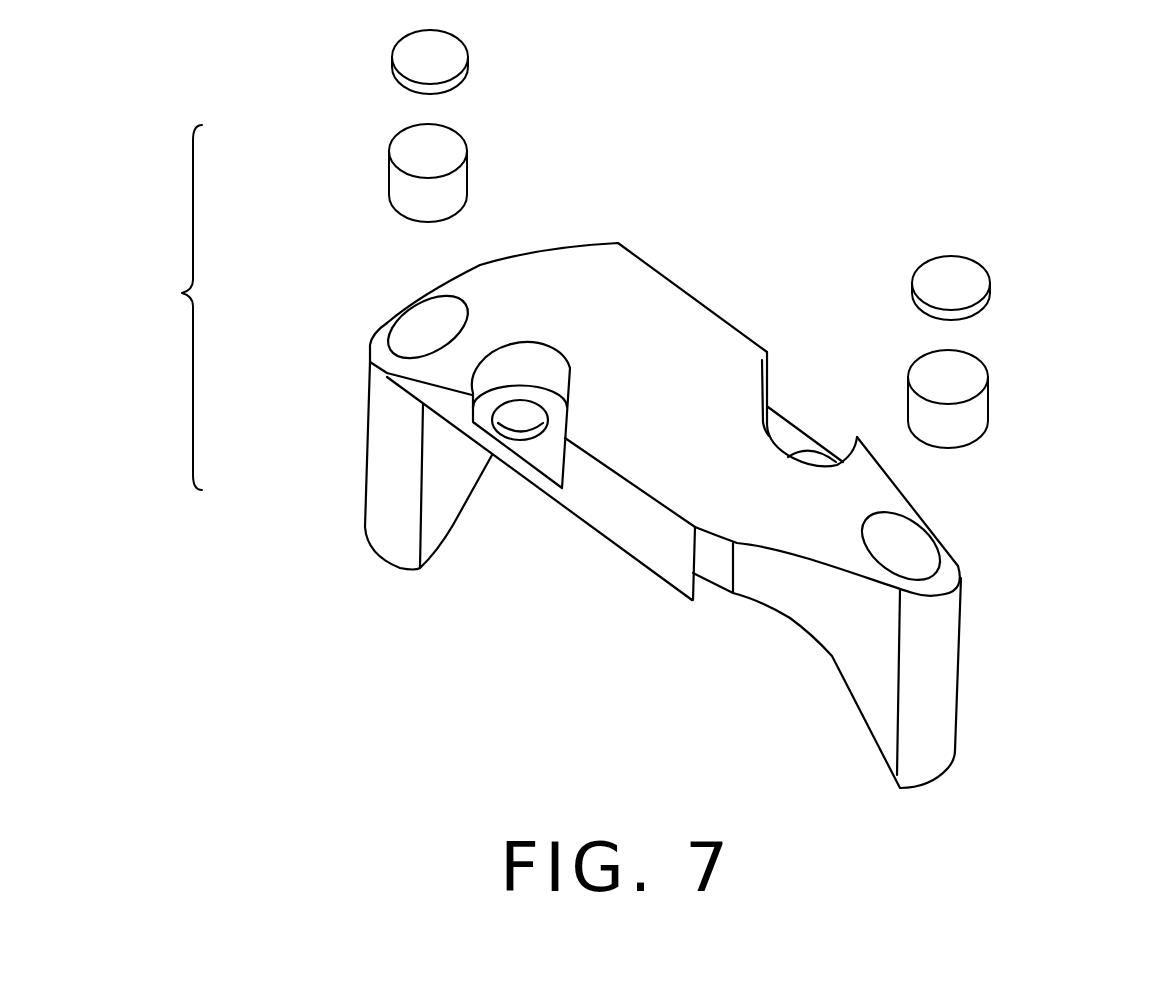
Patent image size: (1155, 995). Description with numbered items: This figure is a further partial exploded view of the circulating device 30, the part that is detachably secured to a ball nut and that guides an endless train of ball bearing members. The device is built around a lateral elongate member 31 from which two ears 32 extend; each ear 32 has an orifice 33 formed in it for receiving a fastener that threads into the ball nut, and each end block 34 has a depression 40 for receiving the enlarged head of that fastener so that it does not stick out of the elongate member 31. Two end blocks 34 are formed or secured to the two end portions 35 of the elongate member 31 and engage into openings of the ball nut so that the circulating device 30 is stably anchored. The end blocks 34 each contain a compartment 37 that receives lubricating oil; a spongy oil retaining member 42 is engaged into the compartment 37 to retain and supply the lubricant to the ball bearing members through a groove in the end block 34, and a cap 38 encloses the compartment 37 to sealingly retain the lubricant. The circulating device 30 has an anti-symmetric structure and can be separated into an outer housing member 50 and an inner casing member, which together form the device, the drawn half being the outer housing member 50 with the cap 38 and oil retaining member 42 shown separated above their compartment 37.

The circulating device 30 is at (692, 451).
The elongate member 31 is at (692, 320).
The ear 32 is at (660, 553).
The orifice 33 is at (520, 427).
The end block 34 is at (942, 712).
The end portion 35 is at (987, 625).
The compartment 37 is at (413, 327).
The cap 38 is at (965, 280).
The depression 40 is at (783, 440).
The oil retaining member 42 is at (968, 420).
The outer housing member 50 is at (644, 409).